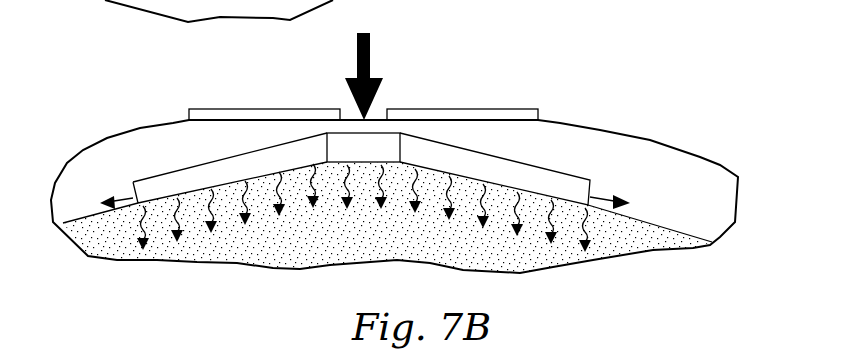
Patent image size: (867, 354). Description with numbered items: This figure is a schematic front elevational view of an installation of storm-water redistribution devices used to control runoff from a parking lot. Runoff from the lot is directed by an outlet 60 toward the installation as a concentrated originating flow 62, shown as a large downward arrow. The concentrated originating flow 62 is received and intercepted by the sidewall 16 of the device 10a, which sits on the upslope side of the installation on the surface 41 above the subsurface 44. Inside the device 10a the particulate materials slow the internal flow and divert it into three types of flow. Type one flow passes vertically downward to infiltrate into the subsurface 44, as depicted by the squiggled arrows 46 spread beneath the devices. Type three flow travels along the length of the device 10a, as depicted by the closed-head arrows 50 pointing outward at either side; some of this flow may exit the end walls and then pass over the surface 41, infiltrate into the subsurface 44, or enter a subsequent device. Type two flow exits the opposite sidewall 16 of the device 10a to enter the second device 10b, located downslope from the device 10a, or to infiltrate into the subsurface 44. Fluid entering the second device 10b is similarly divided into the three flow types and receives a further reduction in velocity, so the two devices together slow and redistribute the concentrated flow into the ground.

The device 10a is at (386, 89).
The second device 10b is at (512, 120).
The sidewall 16 is at (372, 122).
The surface 41 is at (655, 218).
The subsurface 44 is at (497, 256).
The squiggled arrows 46 is at (214, 195).
The closed-head arrows 50 is at (118, 196).
The outlet 60 is at (388, 130).
The concentrated originating flow 62 is at (356, 66).